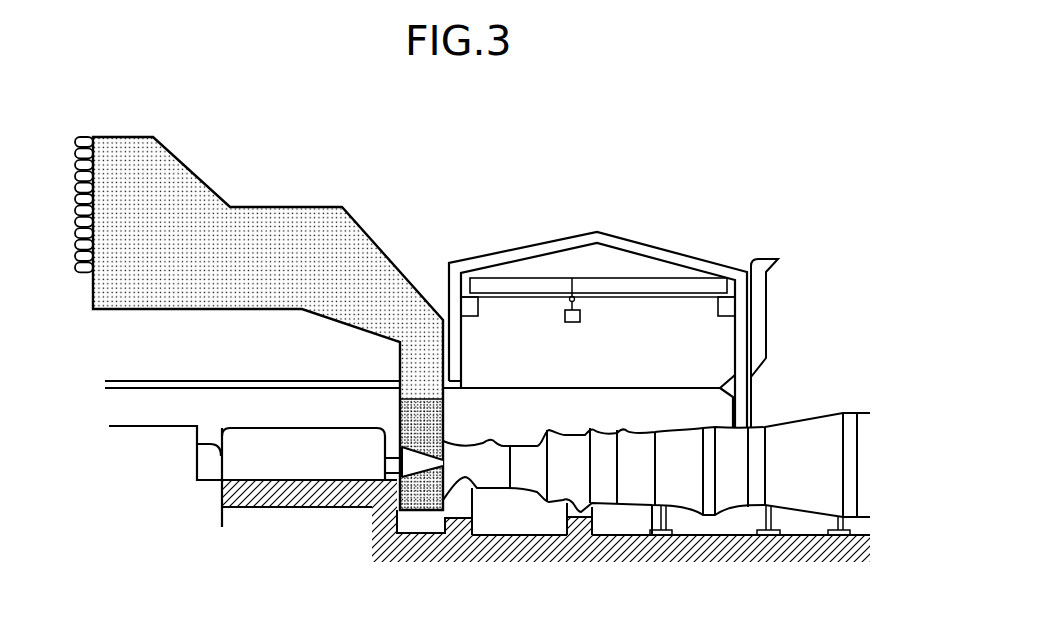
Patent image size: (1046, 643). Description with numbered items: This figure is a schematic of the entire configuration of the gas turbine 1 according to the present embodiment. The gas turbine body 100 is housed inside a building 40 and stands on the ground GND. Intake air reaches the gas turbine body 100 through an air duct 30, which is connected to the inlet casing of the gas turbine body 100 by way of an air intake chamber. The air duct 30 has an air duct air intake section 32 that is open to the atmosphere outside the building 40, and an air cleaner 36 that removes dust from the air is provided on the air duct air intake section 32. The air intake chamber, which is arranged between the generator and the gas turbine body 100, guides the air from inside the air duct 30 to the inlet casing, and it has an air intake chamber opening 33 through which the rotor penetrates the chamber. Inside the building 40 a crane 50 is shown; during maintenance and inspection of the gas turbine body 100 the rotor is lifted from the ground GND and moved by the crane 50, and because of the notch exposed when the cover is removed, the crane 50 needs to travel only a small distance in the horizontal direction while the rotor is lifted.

The gas turbine plant 1 is at (726, 187).
The air duct 30 is at (310, 176).
The air duct air intake section 32 is at (93, 170).
The air intake chamber opening 33 is at (443, 437).
The air cleaner 36 is at (88, 275).
The building 40 is at (638, 241).
The crane 50 is at (576, 300).
The gas turbine body 100 is at (825, 376).
The ground GND is at (716, 537).